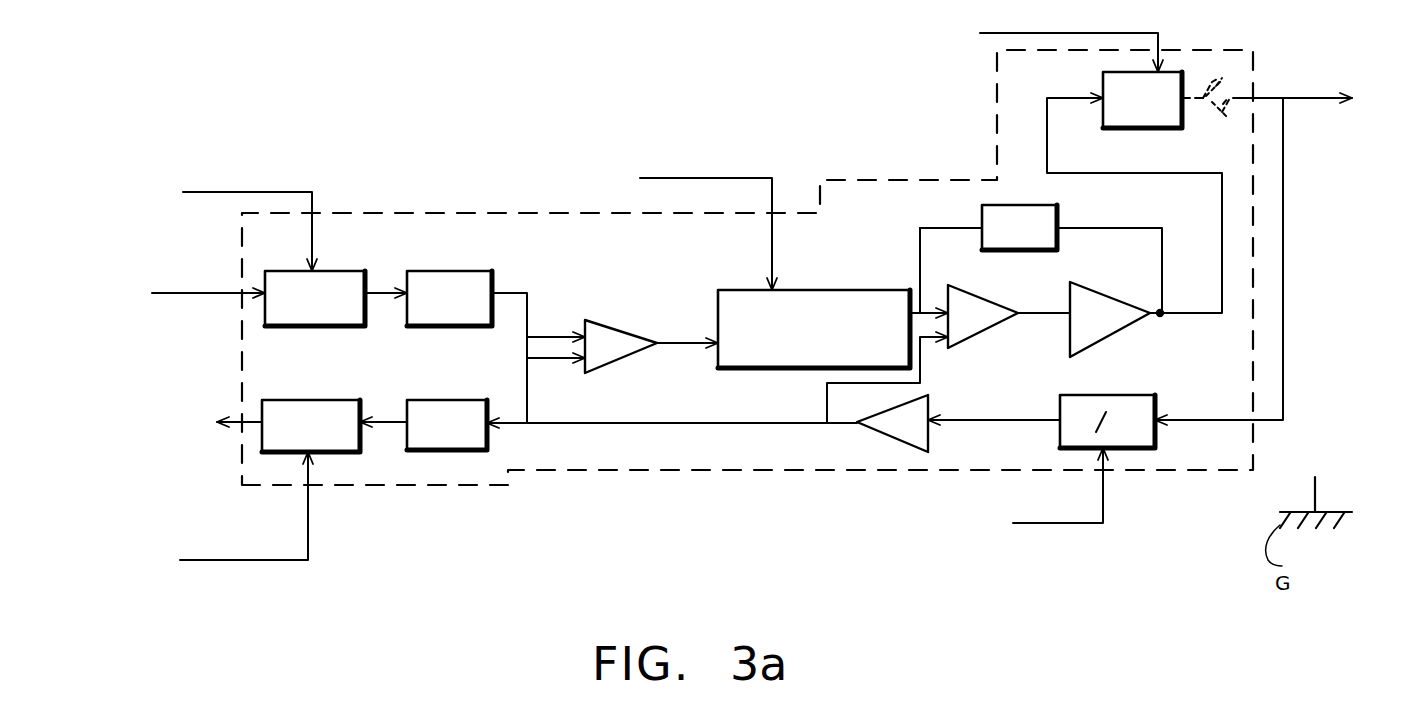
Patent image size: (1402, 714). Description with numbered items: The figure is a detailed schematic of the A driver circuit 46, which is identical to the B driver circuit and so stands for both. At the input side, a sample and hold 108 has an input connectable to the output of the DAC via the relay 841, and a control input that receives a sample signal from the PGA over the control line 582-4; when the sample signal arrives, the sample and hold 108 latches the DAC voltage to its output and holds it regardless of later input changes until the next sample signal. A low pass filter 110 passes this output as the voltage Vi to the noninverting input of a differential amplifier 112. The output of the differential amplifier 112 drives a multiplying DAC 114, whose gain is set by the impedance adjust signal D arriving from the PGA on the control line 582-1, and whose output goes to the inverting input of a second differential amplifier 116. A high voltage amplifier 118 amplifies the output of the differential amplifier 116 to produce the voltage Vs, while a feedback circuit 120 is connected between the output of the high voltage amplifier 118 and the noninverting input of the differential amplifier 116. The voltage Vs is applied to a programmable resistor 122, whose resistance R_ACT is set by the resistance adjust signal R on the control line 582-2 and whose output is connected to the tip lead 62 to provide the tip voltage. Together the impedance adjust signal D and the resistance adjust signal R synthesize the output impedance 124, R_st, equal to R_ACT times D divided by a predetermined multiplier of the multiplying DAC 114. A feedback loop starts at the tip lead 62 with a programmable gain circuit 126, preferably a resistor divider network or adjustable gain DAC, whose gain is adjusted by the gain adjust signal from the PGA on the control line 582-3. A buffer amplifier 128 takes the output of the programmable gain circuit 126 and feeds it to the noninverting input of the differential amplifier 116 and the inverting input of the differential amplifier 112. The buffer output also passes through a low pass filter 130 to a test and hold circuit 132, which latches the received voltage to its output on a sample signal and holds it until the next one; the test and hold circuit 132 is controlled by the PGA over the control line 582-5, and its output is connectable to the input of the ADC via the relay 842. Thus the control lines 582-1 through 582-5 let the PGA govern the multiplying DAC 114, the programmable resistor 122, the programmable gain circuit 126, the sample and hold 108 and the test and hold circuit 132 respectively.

The A driver circuit 46 is at (390, 213).
The tip lead 62 is at (1274, 241).
The relay 841 is at (168, 322).
The relay 842 is at (166, 444).
The control line 582-1 is at (733, 178).
The control line 582-2 is at (1005, 35).
The control line 582-3 is at (1045, 523).
The control line 582-4 is at (248, 192).
The control line 582-5 is at (220, 560).
The sample and hold 108 is at (338, 271).
The low pass filter 110 is at (437, 271).
The differential amplifier 112 is at (638, 298).
The multiplying DAC 114 is at (755, 368).
The differential amplifier 116 is at (975, 295).
The high voltage amplifier 118 is at (1143, 262).
The feedback circuit 120 is at (993, 207).
The programmable resistor 122 is at (1128, 128).
The output impedance 124 is at (1245, 52).
The programmable gain circuit 126 is at (1140, 395).
The buffer amplifier 128 is at (887, 452).
The low pass filter 130 is at (428, 400).
The test and hold circuit 132 is at (290, 400).